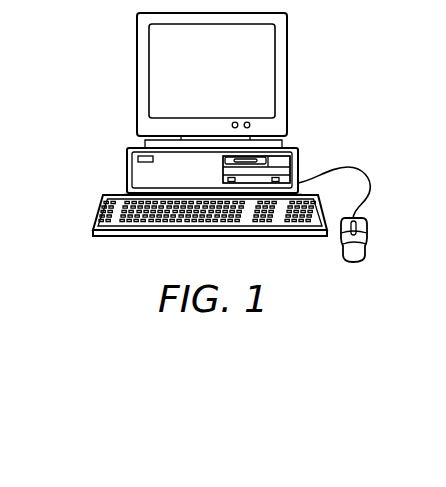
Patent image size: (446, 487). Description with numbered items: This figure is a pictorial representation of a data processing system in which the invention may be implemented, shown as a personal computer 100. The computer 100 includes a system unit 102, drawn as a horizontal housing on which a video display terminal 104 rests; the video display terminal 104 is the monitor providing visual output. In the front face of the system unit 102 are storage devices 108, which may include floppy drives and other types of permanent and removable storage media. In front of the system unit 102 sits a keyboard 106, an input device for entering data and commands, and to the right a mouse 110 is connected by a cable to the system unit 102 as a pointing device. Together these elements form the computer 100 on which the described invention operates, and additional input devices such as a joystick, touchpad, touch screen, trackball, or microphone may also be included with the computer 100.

The computer 100 is at (88, 58).
The system unit 102 is at (127, 168).
The video display terminal 104 is at (287, 75).
The keyboard 106 is at (122, 237).
The storage devices 108 is at (298, 167).
The mouse 110 is at (353, 262).